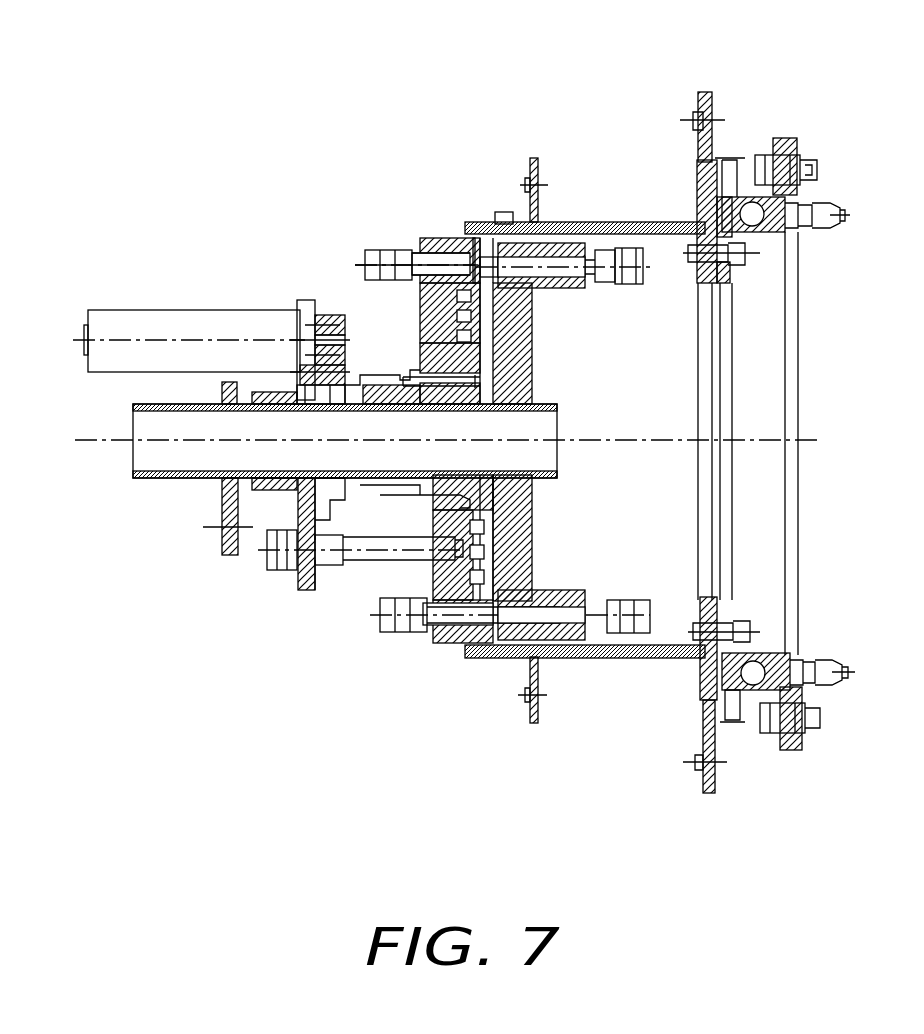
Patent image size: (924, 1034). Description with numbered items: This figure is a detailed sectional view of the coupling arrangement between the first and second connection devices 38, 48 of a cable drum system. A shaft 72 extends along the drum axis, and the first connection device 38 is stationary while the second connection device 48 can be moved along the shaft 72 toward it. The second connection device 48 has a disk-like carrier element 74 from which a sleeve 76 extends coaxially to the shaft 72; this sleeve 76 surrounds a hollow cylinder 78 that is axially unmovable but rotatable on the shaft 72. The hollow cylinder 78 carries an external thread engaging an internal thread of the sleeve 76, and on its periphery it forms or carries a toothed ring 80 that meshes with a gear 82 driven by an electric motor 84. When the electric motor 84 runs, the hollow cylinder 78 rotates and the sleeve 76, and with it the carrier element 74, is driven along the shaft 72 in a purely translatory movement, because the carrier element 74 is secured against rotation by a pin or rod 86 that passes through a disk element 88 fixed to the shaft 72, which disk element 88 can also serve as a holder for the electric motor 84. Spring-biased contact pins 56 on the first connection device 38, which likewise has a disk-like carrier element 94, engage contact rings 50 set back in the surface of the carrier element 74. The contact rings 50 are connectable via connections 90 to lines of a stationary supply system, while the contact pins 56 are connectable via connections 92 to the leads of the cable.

The first connection device 38 is at (568, 222).
The second connection device 48 is at (440, 237).
The contact rings 50 is at (480, 658).
The contact pins 56 is at (497, 255).
The shaft 72 is at (180, 478).
The disk-like carrier element 74 is at (418, 242).
The sleeve 76 is at (383, 383).
The hollow cylinder 78 is at (267, 557).
The toothed ring 80 is at (297, 378).
The gear 82 is at (300, 300).
The electric motor 84 is at (130, 325).
The pin or rod 86 is at (370, 557).
The disk element 88 is at (305, 592).
The connections 90 is at (384, 250).
The connections 92 is at (640, 285).
The disk-like carrier element 94 is at (530, 520).